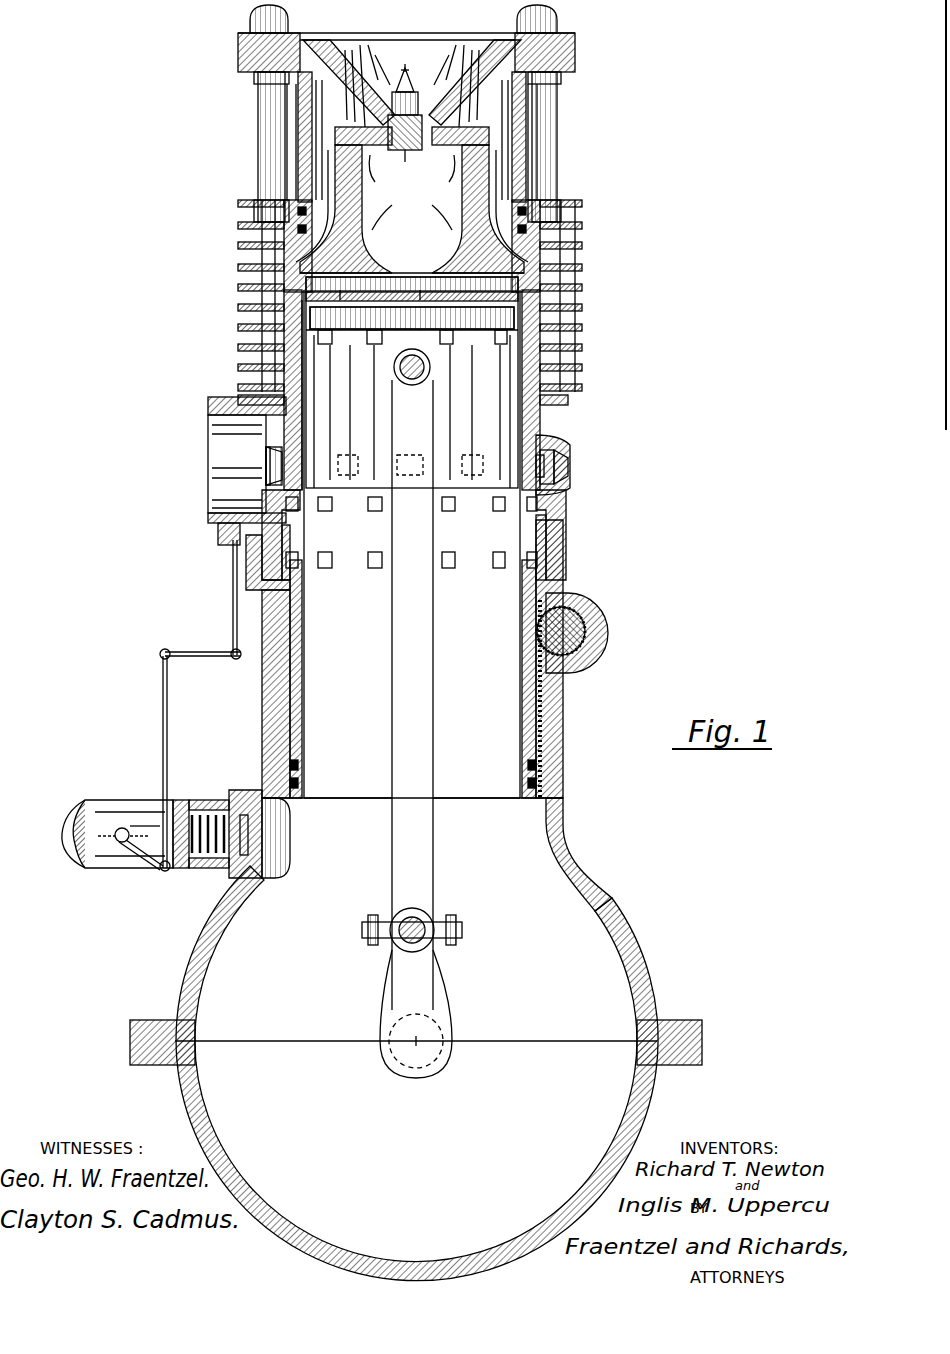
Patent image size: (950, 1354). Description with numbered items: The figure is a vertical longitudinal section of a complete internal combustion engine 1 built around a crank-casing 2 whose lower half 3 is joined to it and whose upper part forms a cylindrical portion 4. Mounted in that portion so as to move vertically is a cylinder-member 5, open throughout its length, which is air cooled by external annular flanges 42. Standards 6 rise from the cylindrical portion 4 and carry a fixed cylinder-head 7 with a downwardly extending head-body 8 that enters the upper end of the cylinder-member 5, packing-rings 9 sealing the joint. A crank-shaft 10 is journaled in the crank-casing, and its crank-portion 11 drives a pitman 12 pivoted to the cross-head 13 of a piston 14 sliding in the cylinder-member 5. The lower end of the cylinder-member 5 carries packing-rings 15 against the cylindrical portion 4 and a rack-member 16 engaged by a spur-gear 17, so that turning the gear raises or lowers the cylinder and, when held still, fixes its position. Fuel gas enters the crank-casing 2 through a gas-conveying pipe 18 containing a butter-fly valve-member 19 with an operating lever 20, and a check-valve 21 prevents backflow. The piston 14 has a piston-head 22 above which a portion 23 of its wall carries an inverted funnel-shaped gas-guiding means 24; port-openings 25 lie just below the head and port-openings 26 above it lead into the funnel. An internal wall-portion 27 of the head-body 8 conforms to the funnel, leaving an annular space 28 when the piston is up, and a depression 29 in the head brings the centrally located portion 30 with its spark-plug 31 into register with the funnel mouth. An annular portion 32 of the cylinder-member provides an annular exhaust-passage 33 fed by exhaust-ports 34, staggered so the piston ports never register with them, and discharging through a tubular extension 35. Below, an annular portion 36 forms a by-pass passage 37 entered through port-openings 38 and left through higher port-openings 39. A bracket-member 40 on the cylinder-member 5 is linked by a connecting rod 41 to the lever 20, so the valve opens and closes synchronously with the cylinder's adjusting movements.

The internal combustion engine 1 is at (185, 160).
The crank-casing 2 is at (622, 906).
The lower half of crank-casing 3 is at (185, 1085).
The cylindrical portion 4 is at (272, 720).
The cylinder-member 5 is at (284, 282).
The standards 6 is at (272, 130).
The cylinder-head 7 is at (238, 52).
The head-body 8 is at (298, 100).
The packing-rings 9 is at (240, 203).
The crank-shaft 10 is at (388, 1038).
The crank-portion 11 is at (400, 995).
The pitman 12 is at (425, 855).
The cross-head 13 is at (424, 369).
The piston 14 is at (518, 405).
The packing-rings 15 is at (290, 783).
The rack-member 16 is at (560, 705).
The spur-gear 17 is at (604, 622).
The gas-conveying pipe 18 is at (102, 870).
The butter-fly valve-member 19 is at (105, 830).
The operating lever 20 is at (148, 870).
The check-valve 21 is at (250, 838).
The piston-head 22 is at (398, 300).
The portion of annular wall 23 is at (240, 245).
The gas-guiding means 24 is at (412, 239).
The port-openings 25 is at (320, 335).
The port-openings 26 is at (526, 284).
The internal wall-portion 27 is at (330, 172).
The annular space 28 is at (412, 177).
The depression 29 is at (465, 78).
The centrally located portion 30 is at (430, 125).
The spark-plug 31 is at (382, 108).
The annular portion 32 is at (568, 450).
The annular exhaust-passage 33 is at (266, 458).
The exhaust-ports 34 is at (350, 455).
The tubular extension 35 is at (208, 405).
The annular portion 36 is at (262, 552).
The by-pass passage 37 is at (262, 522).
The port-openings 38 is at (530, 562).
The port-openings 39 is at (530, 505).
The bracket-member 40 is at (236, 652).
The connecting rod 41 is at (163, 713).
The annular flanges 42 is at (240, 307).